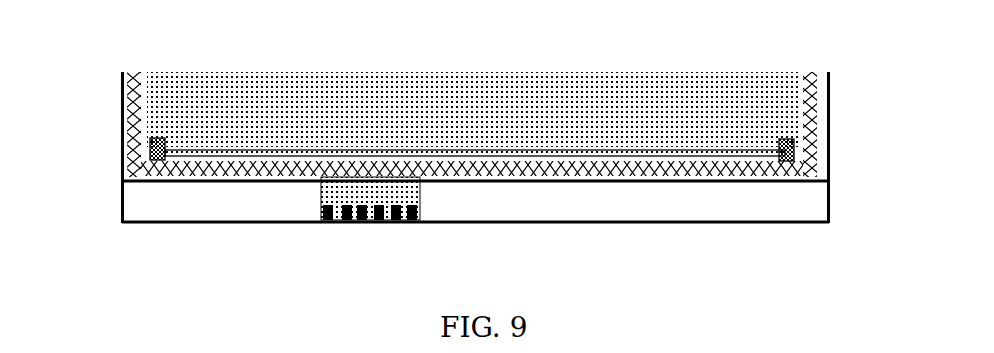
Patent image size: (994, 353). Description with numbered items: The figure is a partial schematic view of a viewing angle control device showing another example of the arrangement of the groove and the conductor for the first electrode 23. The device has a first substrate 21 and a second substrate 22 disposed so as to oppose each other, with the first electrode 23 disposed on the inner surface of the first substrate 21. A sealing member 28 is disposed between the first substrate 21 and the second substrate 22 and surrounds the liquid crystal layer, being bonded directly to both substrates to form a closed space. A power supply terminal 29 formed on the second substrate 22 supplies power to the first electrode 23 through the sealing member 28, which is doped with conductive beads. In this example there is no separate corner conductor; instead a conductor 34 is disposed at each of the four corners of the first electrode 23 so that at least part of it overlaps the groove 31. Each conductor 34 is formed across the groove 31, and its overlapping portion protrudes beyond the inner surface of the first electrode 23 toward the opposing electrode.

The first substrate 21 is at (121, 157).
The second substrate 22 is at (175, 223).
The first electrode 23 is at (710, 95).
The sealing member 28 is at (137, 82).
The power supply terminal 29 is at (333, 222).
The groove 31 is at (185, 153).
The conductor 34 is at (150, 142).